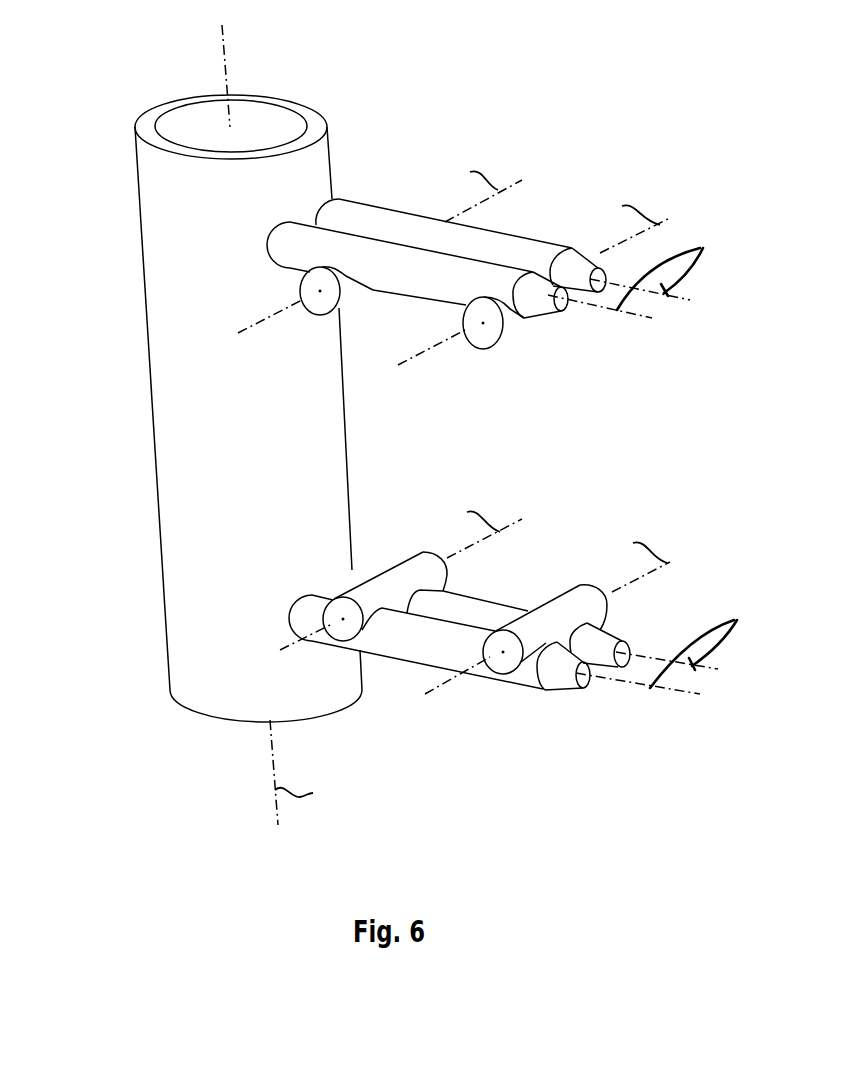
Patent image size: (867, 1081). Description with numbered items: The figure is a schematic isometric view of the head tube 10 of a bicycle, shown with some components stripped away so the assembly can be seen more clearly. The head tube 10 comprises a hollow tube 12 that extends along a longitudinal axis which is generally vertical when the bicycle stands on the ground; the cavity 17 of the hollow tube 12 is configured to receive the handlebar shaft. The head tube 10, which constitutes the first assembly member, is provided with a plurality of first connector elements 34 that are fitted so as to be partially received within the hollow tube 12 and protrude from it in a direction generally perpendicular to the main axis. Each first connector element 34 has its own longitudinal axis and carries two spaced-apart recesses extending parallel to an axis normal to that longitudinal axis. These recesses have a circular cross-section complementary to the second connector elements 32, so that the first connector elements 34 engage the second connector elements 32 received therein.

The head tube 10 is at (166, 66).
The hollow tube 12 is at (167, 258).
The cavity 17 is at (183, 118).
The second connector elements 32 is at (353, 293).
The first connector elements 34 is at (457, 268).